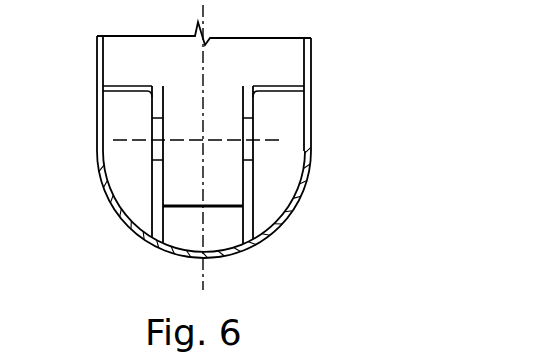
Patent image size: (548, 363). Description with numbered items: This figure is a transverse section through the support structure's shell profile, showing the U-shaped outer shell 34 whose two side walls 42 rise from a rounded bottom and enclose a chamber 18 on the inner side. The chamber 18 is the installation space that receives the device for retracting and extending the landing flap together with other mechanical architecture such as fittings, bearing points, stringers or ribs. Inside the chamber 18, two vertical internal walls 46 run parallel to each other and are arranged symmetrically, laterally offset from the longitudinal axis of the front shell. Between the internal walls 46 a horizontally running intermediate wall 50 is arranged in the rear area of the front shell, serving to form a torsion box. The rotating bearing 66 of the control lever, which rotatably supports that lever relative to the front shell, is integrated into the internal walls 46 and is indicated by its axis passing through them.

The chamber 18 is at (154, 66).
The side walls 42 is at (100, 73).
The outer shell 34 is at (277, 230).
The internal walls 46 is at (157, 178).
The intermediate wall 50 is at (213, 208).
The rotating bearing 66 is at (283, 140).